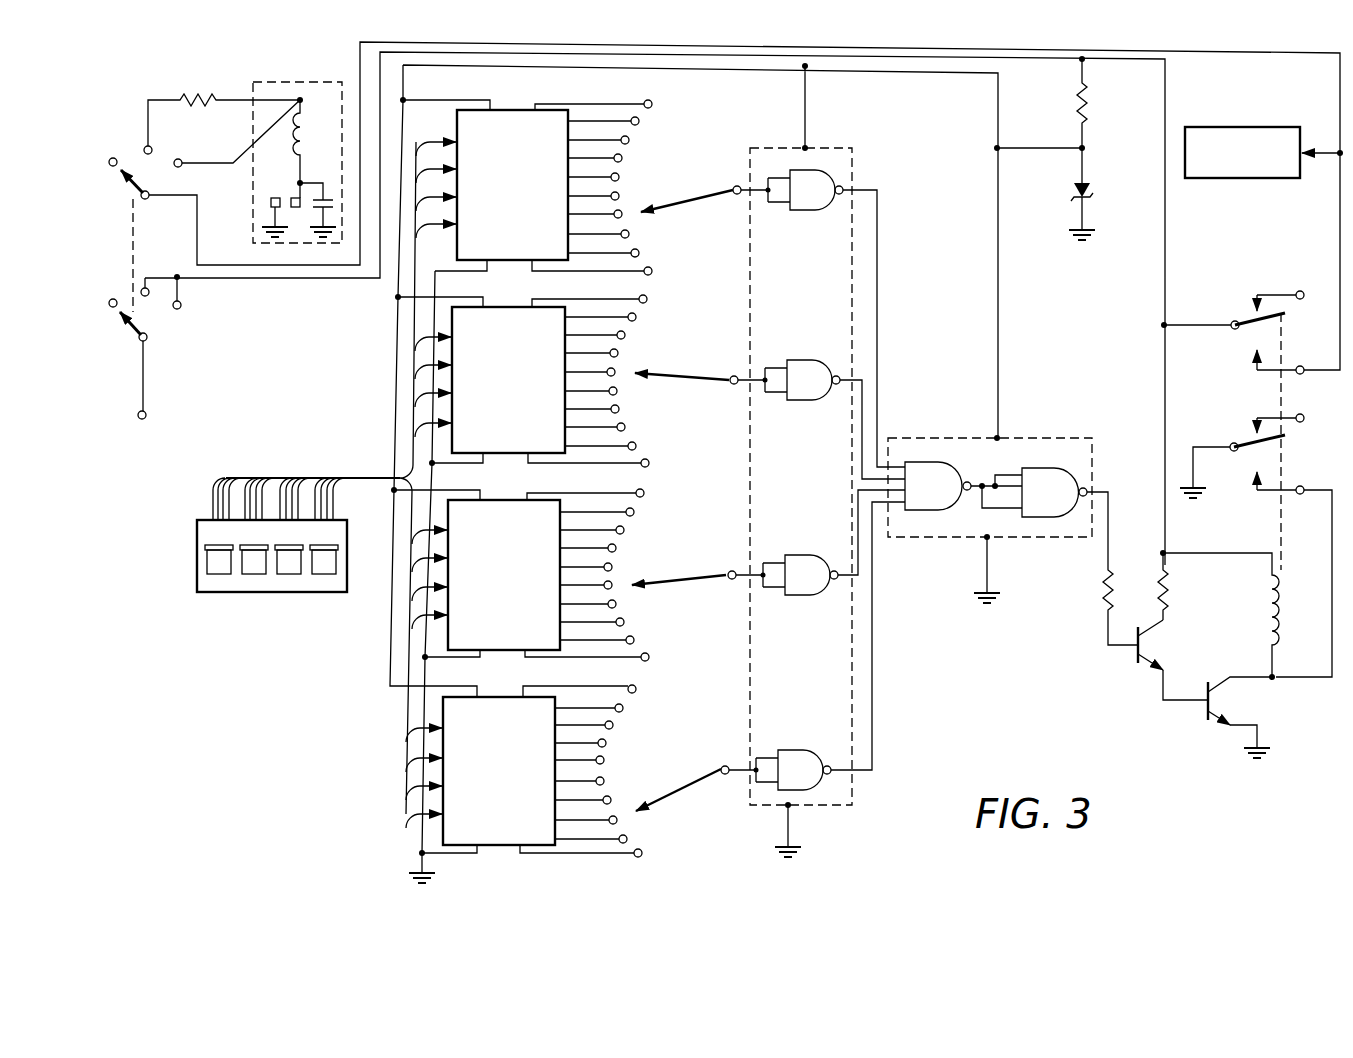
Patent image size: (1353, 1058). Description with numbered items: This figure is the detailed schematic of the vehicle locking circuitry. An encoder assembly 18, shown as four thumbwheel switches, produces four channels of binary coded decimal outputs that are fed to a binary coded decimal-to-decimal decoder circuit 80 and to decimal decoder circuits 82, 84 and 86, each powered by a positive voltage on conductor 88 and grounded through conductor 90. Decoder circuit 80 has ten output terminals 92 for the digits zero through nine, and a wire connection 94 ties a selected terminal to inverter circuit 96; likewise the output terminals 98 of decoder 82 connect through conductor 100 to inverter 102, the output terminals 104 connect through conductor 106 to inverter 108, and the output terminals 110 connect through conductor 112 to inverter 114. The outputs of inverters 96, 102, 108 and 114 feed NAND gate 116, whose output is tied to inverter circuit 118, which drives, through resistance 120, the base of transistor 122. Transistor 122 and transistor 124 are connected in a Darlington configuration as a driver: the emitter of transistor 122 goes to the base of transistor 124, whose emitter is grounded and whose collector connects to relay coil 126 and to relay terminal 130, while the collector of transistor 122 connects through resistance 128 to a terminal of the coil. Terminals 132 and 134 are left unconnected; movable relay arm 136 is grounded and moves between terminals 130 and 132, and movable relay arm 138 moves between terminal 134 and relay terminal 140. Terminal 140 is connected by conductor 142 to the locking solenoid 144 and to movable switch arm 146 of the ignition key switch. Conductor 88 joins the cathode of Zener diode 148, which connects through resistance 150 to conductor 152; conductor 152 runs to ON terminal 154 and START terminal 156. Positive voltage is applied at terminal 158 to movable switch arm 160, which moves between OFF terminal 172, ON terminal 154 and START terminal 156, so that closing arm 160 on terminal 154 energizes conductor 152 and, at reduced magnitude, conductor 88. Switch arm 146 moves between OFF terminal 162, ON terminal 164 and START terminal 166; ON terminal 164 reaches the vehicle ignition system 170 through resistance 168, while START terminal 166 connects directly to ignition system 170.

The encoder assembly 18 is at (208, 532).
The binary coded decimal-to-decimal decoder circuit 80 is at (535, 188).
The decimal decoder circuit 82 is at (531, 381).
The decimal decoder circuit 84 is at (529, 575).
The decimal decoder circuit 86 is at (531, 771).
The conductor 88 is at (891, 75).
The conductor 90 is at (418, 856).
The output terminals 92 is at (657, 158).
The wire connection 94 is at (667, 200).
The inverter circuit 96 is at (819, 318).
The output terminals 98 is at (661, 338).
The conductor 100 is at (663, 372).
The inverter 102 is at (817, 419).
The output terminals 104 is at (656, 529).
The conductor 106 is at (667, 578).
The inverter 108 is at (816, 542).
The output terminals 110 is at (649, 733).
The conductor 112 is at (655, 800).
The inverter 114 is at (813, 646).
The NAND gate 116 is at (963, 486).
The inverter circuit 118 is at (1065, 516).
The resistance 120 is at (1103, 595).
The transistor 122 is at (1147, 678).
The transistor 124 is at (1212, 736).
The relay coil 126 is at (1268, 625).
The resistance 128 is at (1170, 591).
The terminal 130 is at (1300, 486).
The terminal 132 is at (1300, 414).
The terminal 134 is at (1300, 291).
The movable relay arm 136 is at (1249, 449).
The movable relay arm 138 is at (1249, 327).
The relay terminal 140 is at (1303, 366).
The conductor 142 is at (826, 48).
The locking solenoid 144 is at (1262, 128).
The movable switch arm 146 is at (130, 188).
The Zener diode 148 is at (1090, 195).
The resistance 150 is at (1089, 103).
The conductor 152 is at (582, 48).
The ON terminal 154 is at (149, 282).
The START terminal 156 is at (181, 311).
The terminal 158 is at (147, 418).
The movable switch arm 160 is at (126, 327).
The OFF terminal 162 is at (110, 167).
The ON terminal 164 is at (151, 147).
The START terminal 166 is at (181, 168).
The resistance 168 is at (203, 96).
The vehicle ignition system 170 is at (279, 80).
The OFF terminal 172 is at (109, 307).